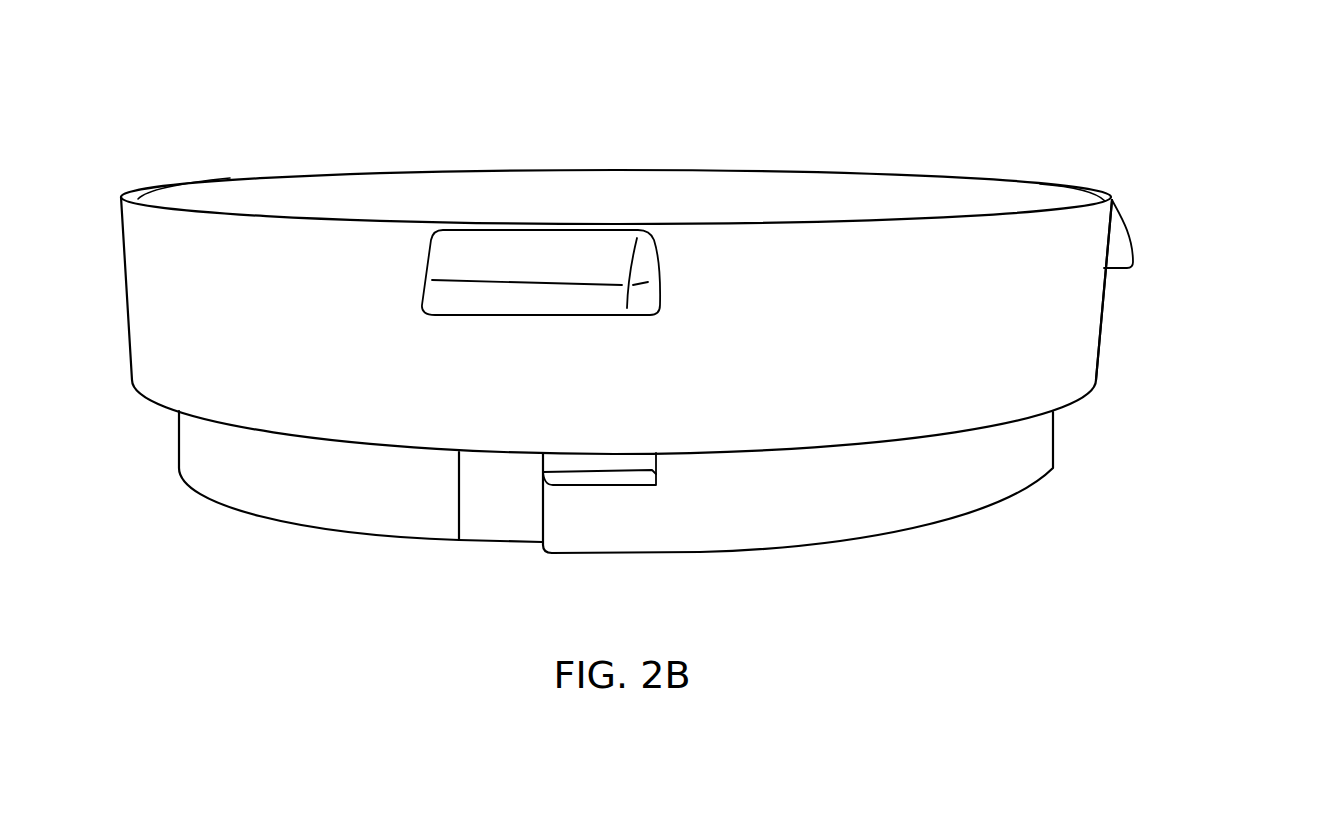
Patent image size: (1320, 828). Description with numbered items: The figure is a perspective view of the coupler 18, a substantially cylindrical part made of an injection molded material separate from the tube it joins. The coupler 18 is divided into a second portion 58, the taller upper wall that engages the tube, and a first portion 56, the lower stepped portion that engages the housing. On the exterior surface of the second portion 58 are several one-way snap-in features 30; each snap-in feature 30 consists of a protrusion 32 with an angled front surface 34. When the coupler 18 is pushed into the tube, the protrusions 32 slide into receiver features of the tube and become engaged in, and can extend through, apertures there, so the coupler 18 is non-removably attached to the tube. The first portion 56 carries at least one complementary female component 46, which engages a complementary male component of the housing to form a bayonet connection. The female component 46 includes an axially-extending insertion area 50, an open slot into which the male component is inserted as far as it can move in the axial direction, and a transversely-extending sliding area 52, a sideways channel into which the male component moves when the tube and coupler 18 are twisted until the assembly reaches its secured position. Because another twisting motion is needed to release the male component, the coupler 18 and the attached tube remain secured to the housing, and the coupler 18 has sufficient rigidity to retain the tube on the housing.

The coupler 18 is at (616, 253).
The one-way snap-in feature 30 is at (707, 165).
The protrusion 32 is at (645, 268).
The angled front surface 34 is at (563, 247).
The complementary female component 46 is at (416, 496).
The axially-extending insertion area 50 is at (485, 580).
The transversely-extending sliding area 52 is at (599, 526).
The first portion 56 is at (1053, 440).
The second portion 58 is at (1171, 290).